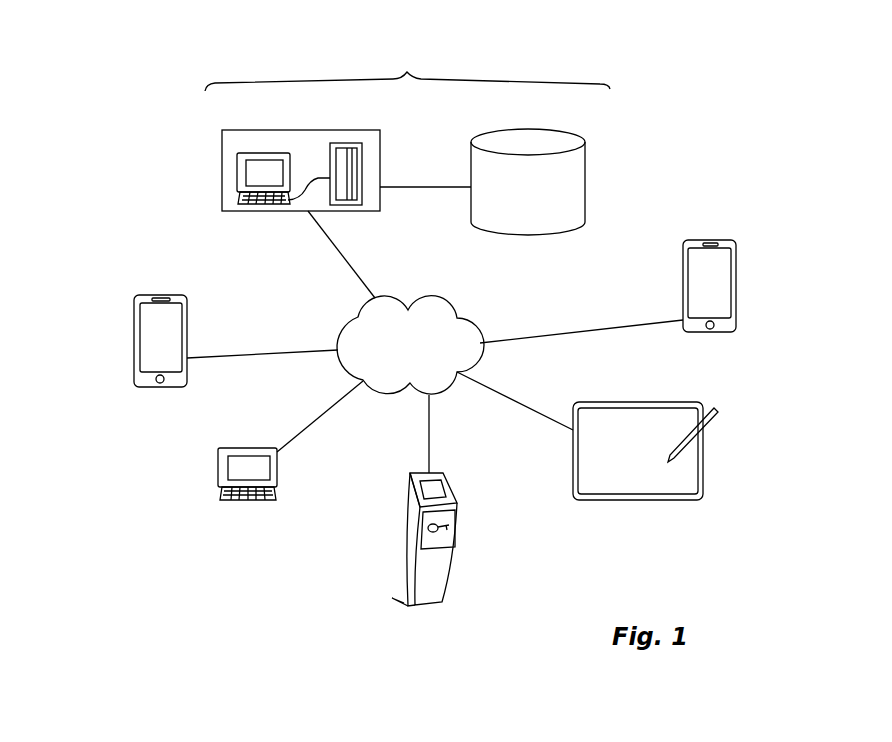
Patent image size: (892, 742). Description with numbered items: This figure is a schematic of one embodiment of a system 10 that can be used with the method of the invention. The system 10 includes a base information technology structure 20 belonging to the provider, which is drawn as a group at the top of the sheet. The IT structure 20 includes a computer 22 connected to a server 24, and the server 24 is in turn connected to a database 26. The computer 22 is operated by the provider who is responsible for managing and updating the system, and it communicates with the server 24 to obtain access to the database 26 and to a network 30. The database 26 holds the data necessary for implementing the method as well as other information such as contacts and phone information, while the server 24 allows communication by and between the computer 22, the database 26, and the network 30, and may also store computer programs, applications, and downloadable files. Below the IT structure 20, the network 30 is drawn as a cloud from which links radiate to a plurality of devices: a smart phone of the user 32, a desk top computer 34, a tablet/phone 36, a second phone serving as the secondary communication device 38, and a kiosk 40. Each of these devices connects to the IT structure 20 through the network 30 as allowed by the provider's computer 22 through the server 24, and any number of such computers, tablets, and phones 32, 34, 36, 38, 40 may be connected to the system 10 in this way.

The system 10 is at (635, 59).
The information technology structure 20 is at (385, 131).
The computer 22 is at (237, 168).
The server 24 is at (362, 145).
The database 26 is at (585, 163).
The network 30 is at (455, 300).
The smart phone of the user 32 is at (134, 325).
The desk top computer 34 is at (218, 465).
The tablet/phone 36 is at (703, 447).
The second phone 38 is at (736, 248).
The kiosk 40 is at (458, 540).